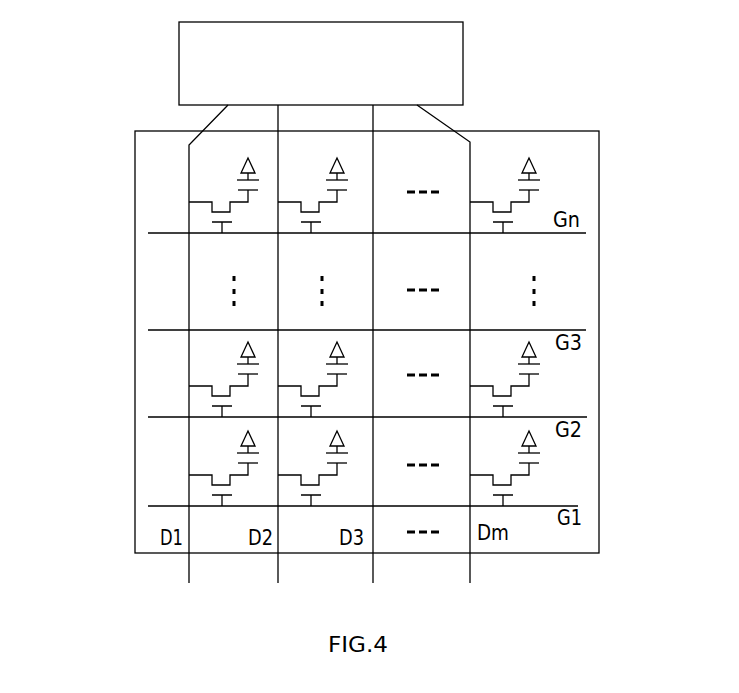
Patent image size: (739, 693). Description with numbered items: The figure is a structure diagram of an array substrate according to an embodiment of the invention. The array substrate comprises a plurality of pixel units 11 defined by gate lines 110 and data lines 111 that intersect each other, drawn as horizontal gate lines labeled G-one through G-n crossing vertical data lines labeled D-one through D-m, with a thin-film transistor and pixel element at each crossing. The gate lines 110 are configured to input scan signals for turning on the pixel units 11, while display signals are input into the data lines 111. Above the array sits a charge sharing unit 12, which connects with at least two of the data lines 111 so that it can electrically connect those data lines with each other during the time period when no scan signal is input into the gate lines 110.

The pixel unit 11 is at (582, 375).
The charge sharing unit 12 is at (207, 33).
The gate line 110 is at (557, 233).
The data line 111 is at (471, 150).